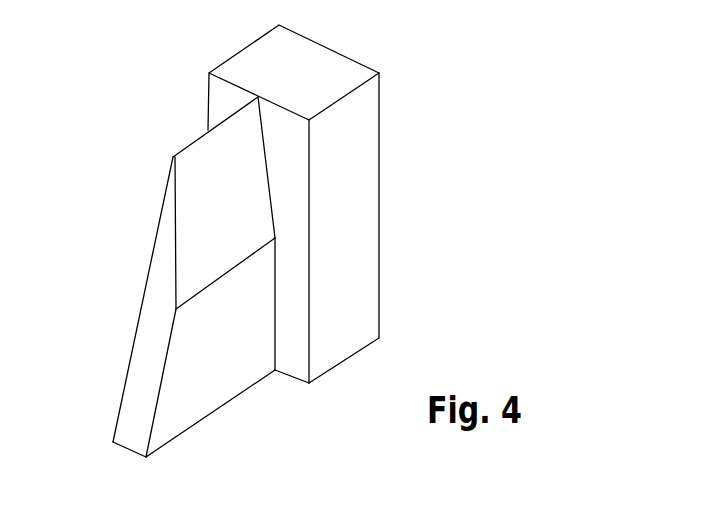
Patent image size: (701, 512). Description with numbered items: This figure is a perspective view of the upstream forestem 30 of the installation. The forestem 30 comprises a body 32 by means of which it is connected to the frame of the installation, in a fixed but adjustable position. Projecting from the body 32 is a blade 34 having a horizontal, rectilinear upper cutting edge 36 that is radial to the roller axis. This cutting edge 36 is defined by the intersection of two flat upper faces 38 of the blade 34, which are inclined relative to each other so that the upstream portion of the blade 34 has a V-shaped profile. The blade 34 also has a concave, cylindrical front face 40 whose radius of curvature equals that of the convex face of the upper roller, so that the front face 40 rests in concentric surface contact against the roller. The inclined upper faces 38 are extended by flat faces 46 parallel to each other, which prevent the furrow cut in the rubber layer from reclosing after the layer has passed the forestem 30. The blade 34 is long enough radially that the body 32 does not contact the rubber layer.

The forestem 30 is at (398, 204).
The body 32 is at (350, 143).
The blade 34 is at (127, 422).
The upper cutting edge 36 is at (188, 142).
The flat upper faces 38 is at (153, 232).
The concave cylindrical front face 40 is at (152, 313).
The flat faces 46 is at (118, 398).